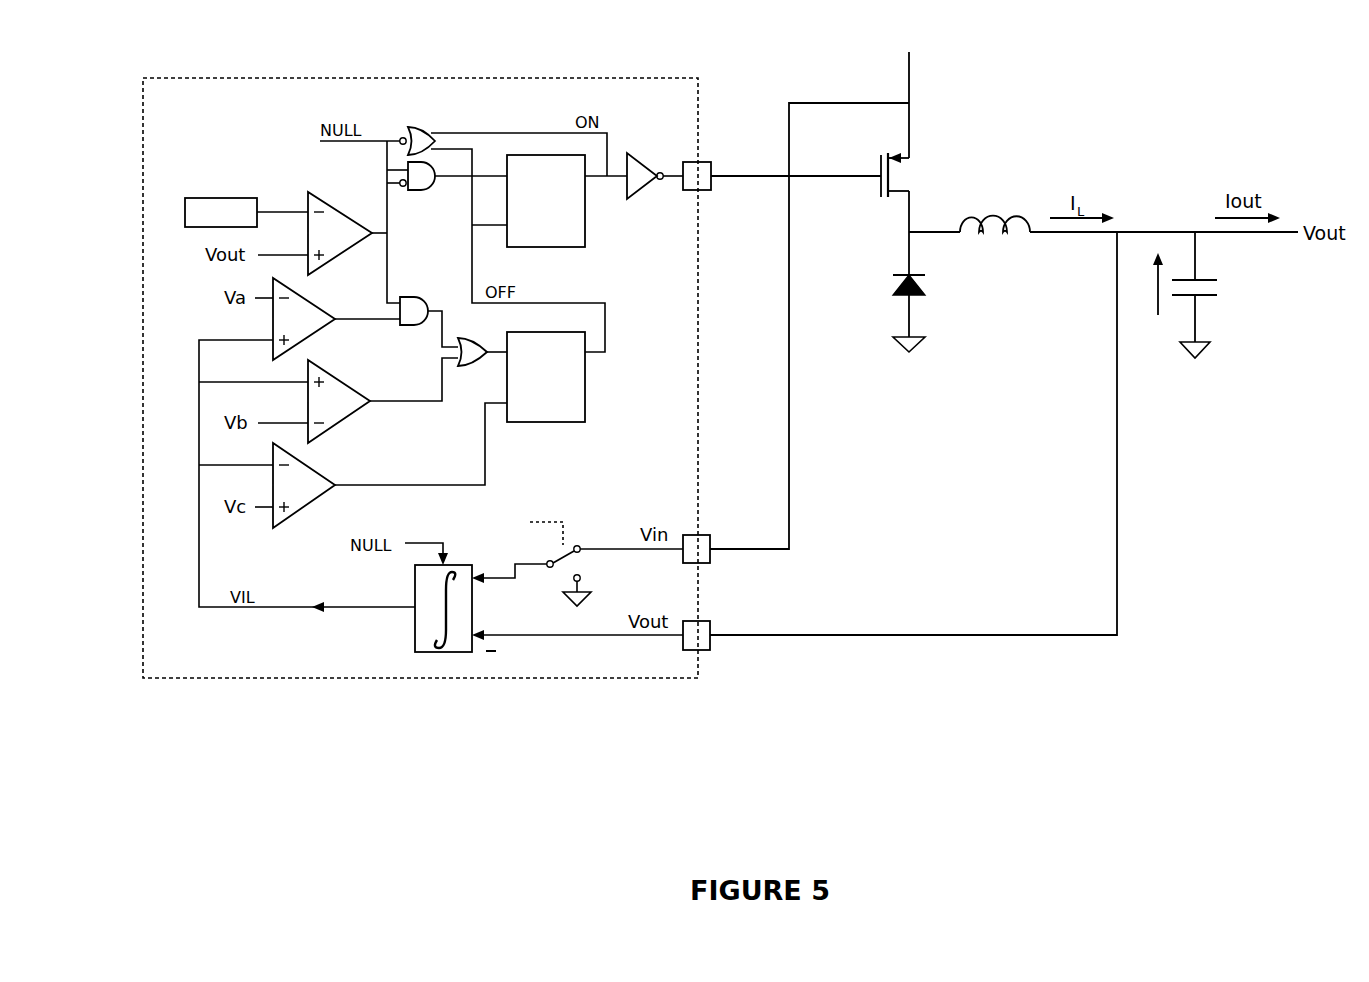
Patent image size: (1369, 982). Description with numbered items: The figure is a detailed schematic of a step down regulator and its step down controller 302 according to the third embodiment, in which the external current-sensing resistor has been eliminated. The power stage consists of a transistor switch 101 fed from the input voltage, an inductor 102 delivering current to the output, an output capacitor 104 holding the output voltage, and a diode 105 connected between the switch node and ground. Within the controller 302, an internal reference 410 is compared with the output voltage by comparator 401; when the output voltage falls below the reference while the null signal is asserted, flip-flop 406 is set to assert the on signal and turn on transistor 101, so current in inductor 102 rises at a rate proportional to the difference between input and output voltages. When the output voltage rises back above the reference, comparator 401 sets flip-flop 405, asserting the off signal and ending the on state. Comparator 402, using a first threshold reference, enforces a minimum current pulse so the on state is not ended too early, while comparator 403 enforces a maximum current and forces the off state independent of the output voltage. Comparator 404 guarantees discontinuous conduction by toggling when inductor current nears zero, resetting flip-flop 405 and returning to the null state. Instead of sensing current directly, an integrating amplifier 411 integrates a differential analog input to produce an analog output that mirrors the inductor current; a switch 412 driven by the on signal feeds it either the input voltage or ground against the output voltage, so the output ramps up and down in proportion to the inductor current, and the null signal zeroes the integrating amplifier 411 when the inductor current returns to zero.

The transistor switch 101 is at (912, 172).
The inductor 102 is at (972, 216).
The capacitor 104 is at (1227, 297).
The diode 105 is at (886, 293).
The switching controller 302 is at (350, 77).
The comparator 401 is at (340, 207).
The comparator 402 is at (327, 308).
The comparator 403 is at (355, 385).
The comparator 404 is at (333, 471).
The flip-flop 405 is at (594, 392).
The flip-flop 406 is at (535, 254).
The internal reference 410 is at (232, 197).
The integrating amplifier 411 is at (412, 633).
The switch 412 is at (578, 541).